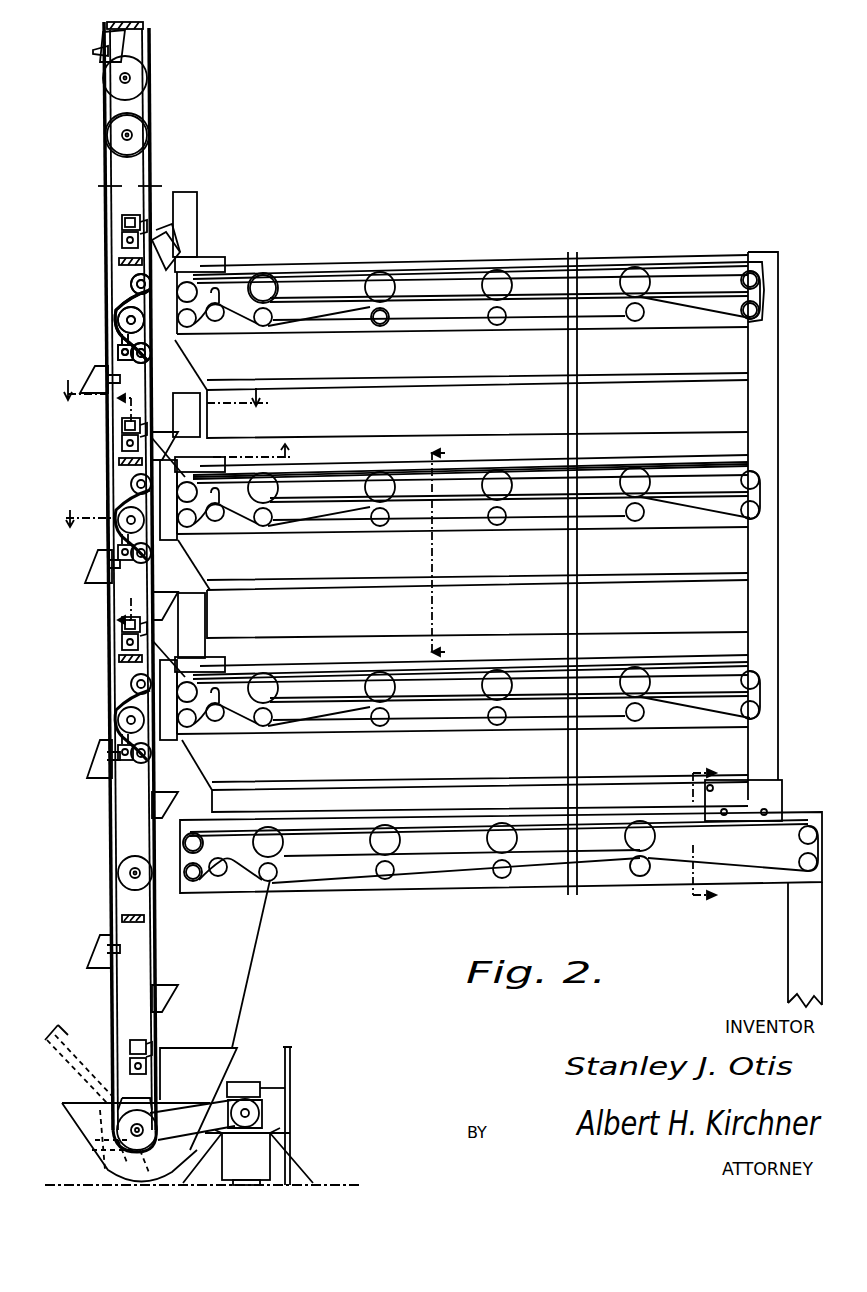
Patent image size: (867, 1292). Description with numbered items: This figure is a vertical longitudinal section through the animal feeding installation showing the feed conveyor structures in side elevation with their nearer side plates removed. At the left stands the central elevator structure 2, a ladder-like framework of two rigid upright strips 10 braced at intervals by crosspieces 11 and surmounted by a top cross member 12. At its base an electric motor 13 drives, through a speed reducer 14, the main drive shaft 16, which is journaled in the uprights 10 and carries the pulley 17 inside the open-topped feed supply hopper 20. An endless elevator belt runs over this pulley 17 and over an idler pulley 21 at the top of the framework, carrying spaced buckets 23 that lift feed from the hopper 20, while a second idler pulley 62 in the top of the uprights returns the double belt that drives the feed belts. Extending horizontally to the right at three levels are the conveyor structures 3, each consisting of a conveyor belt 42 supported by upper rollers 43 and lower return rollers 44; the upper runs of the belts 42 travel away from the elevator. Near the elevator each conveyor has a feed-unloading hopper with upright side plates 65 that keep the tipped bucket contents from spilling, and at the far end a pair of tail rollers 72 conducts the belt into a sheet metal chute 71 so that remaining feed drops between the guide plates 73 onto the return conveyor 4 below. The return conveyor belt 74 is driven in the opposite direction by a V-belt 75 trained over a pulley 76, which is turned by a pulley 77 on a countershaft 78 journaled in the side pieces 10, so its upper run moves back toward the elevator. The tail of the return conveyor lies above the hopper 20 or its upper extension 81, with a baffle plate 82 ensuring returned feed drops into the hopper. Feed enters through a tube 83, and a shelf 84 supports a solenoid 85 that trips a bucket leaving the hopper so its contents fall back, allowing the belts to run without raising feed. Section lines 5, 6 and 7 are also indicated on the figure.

The elevator structure 2 is at (158, 142).
The conveyor structure 3 is at (648, 251).
The return conveyor 4 is at (434, 897).
The section line 5 is at (125, 500).
The section line 6 is at (163, 385).
The section line 7 is at (182, 503).
The upright strips 10 is at (130, 826).
The crosspieces 11 is at (124, 918).
The top cross member 12 is at (140, 30).
The electric motor 13 is at (280, 1158).
The speed reducer 14 is at (247, 1084).
The main drive shaft 16 is at (143, 1132).
The pulley 17 is at (148, 1122).
The feed supply hopper 20 is at (85, 1120).
The idler pulley 21 is at (137, 80).
The buckets 23 is at (100, 580).
The conveyor belt 42 is at (290, 272).
The upper rollers 43 is at (264, 275).
The lower return rollers 44 is at (382, 325).
The idler pulley 62 is at (112, 130).
The upright side plates 65 is at (190, 208).
The sheet metal chute 71 is at (766, 310).
The tail rollers 72 is at (752, 284).
The guide plates 73 is at (766, 802).
The return conveyor belt 74 is at (208, 822).
The V-belt 75 is at (182, 895).
The pulley 76 is at (186, 893).
The pulley 77 is at (128, 863).
The countershaft 78 is at (131, 875).
The upper extension 81 is at (180, 1062).
The baffle plate 82 is at (248, 982).
The tube 83 is at (128, 1070).
The shelf 84 is at (128, 1058).
The solenoid 85 is at (128, 1045).